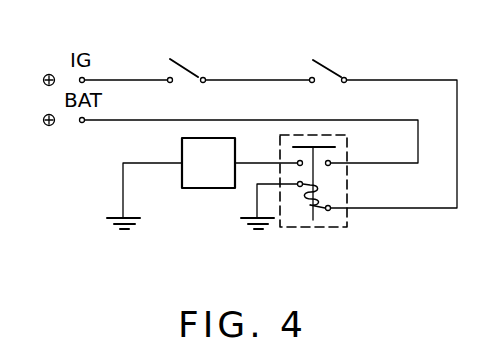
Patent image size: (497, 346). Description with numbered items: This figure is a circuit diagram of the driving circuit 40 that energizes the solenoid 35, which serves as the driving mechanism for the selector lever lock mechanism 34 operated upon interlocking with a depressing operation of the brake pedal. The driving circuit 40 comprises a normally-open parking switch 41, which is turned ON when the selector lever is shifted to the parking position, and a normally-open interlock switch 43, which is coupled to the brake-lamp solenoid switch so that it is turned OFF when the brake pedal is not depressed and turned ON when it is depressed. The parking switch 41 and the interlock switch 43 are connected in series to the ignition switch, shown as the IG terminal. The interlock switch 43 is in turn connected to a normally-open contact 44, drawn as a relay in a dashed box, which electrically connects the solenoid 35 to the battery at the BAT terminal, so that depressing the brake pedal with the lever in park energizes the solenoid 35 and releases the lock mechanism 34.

The selector lever lock mechanism 34 is at (213, 189).
The solenoid 35 is at (180, 175).
The driving circuit 40 is at (271, 118).
The parking switch 41 is at (193, 64).
The interlock switch 43 is at (335, 68).
The normally-open contact 44 is at (347, 175).